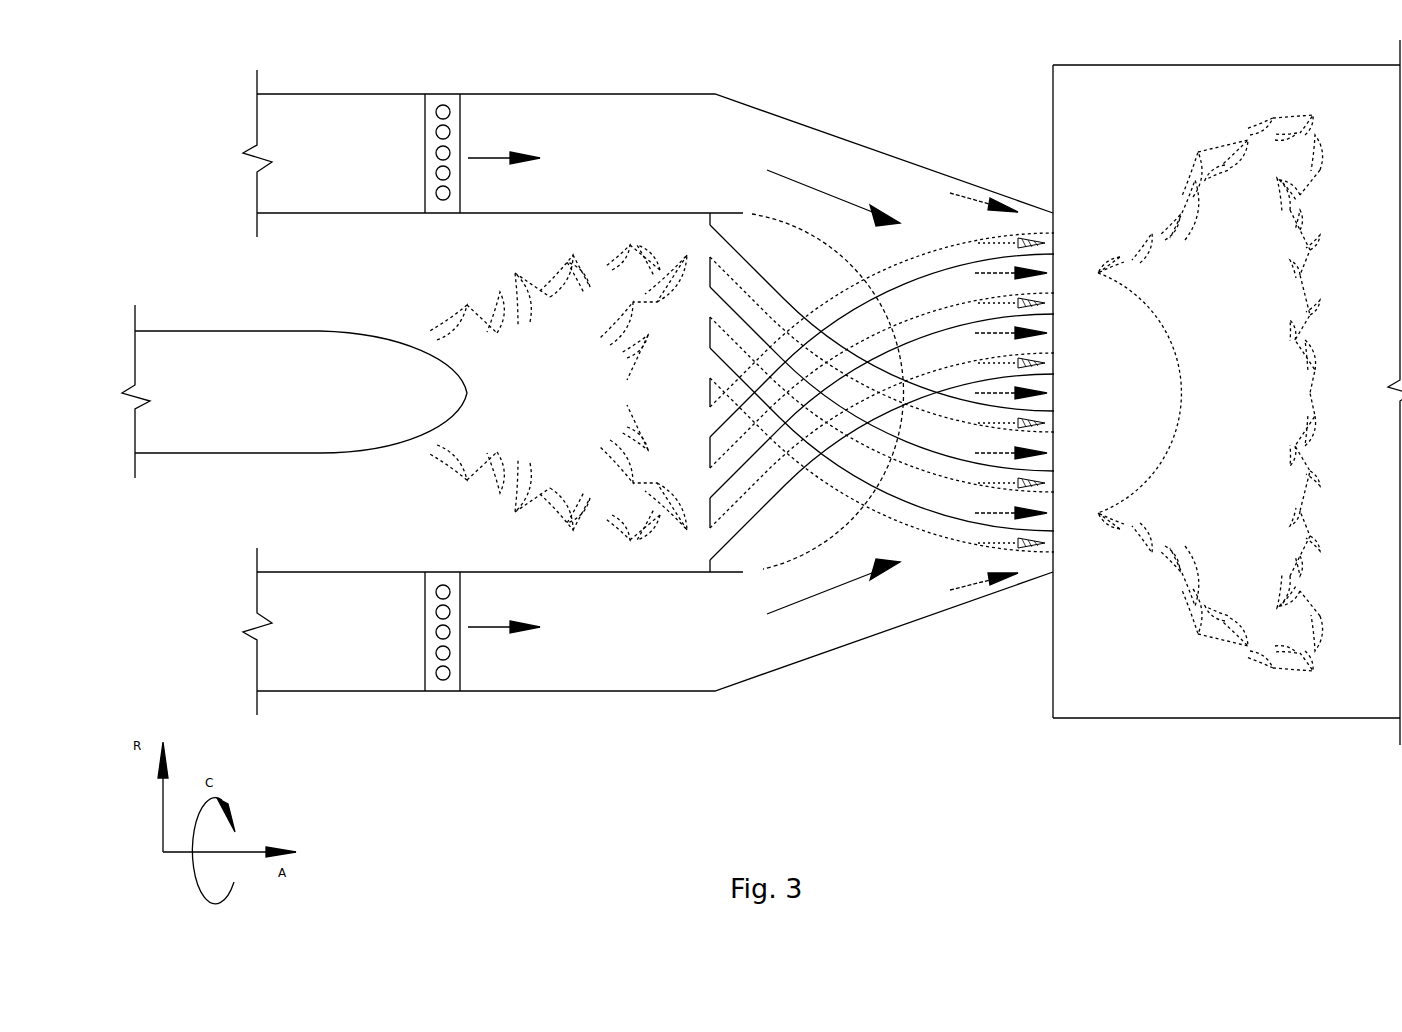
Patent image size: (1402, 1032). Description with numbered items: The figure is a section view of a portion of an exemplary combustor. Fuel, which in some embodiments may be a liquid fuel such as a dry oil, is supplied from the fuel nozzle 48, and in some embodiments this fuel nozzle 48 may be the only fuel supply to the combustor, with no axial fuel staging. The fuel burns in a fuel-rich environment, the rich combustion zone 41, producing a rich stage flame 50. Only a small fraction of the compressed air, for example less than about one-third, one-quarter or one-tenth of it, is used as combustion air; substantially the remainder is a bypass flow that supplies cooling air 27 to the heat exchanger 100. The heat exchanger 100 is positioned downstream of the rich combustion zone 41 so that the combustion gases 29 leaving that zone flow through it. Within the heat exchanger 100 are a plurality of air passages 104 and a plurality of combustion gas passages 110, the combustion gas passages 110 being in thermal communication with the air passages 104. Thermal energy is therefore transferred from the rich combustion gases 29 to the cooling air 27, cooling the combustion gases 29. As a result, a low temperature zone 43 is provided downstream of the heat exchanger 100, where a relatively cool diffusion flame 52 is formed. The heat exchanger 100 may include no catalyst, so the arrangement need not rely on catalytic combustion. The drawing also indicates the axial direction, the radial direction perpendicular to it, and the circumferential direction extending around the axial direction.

The cooling air 27 is at (498, 157).
The combustion gases 29 is at (1018, 243).
The rich combustion zone 41 is at (324, 294).
The low temperature zone 43 is at (1232, 108).
The fuel nozzle 48 is at (218, 440).
The rich stage flame 50 is at (497, 467).
The diffusion flame 52 is at (1228, 600).
The heat exchanger 100 is at (697, 140).
The air passages 104 is at (740, 307).
The combustion gas passages 110 is at (936, 243).